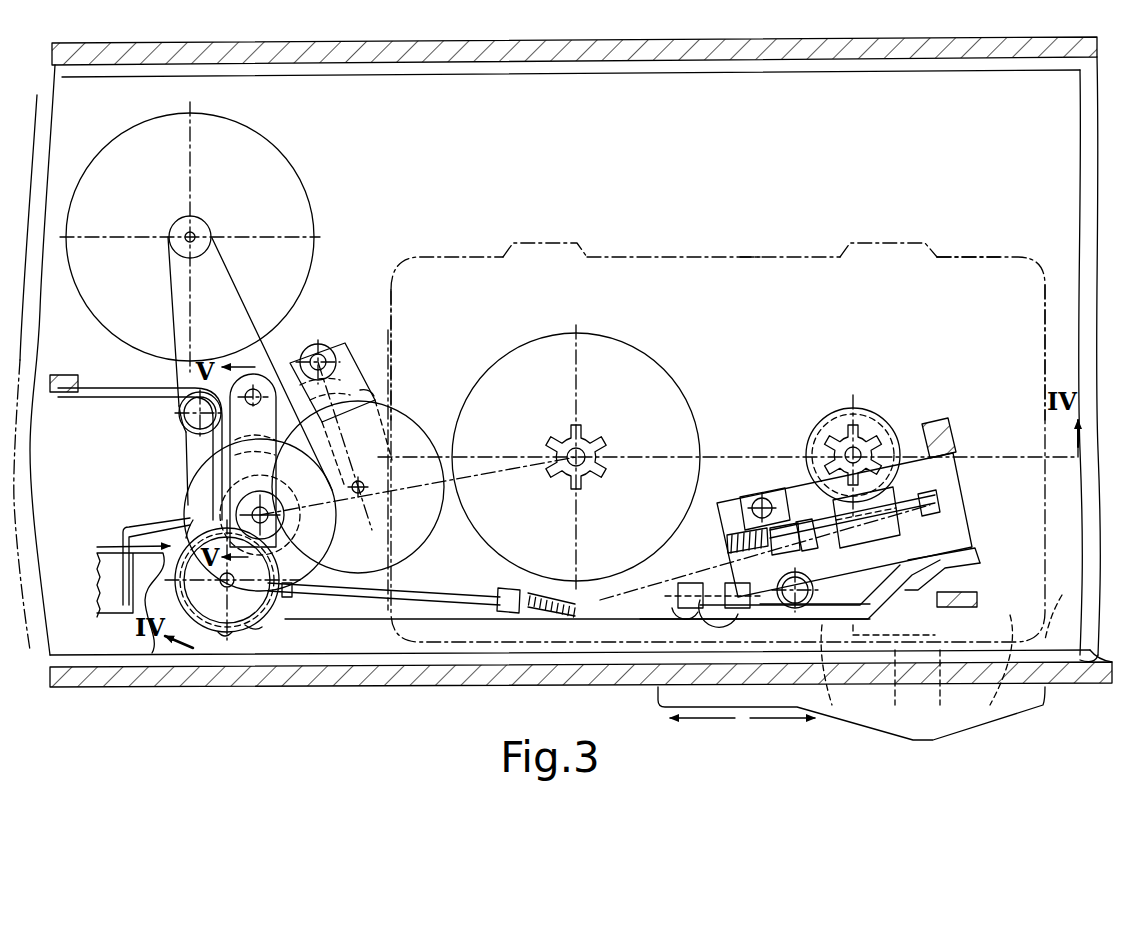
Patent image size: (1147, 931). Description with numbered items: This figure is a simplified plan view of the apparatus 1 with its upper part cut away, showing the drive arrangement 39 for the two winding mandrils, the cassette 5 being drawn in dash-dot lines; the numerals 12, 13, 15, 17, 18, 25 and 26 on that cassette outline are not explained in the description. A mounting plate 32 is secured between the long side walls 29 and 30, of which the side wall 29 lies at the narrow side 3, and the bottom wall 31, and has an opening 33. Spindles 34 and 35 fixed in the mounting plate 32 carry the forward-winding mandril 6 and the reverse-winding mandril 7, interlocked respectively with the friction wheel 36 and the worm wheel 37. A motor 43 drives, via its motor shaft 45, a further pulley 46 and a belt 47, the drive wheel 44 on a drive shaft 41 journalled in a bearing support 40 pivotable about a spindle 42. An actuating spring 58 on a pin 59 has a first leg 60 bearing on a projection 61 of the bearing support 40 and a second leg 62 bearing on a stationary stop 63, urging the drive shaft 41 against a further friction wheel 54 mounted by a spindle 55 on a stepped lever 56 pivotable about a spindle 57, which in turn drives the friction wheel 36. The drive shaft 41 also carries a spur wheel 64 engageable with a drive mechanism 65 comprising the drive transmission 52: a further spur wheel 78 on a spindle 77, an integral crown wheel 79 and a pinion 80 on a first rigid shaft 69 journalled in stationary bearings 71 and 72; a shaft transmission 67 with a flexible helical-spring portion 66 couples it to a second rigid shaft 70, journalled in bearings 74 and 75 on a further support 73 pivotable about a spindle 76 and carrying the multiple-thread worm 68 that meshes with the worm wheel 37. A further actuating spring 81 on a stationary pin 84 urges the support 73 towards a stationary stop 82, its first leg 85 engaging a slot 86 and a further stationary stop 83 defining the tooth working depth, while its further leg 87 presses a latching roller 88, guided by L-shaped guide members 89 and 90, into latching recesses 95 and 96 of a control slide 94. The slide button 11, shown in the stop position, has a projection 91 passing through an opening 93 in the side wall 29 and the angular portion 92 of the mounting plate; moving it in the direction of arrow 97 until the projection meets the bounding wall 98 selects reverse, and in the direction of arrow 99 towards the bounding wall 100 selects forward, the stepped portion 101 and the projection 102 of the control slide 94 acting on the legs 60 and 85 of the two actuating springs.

The apparatus 1 is at (1098, 132).
The long and narrow side 3 is at (170, 690).
The cassette 5 is at (880, 233).
The forward-winding mandril 6 is at (588, 440).
The reverse-winding mandril 7 is at (822, 440).
The slide button 11 is at (975, 732).
The cartridge housing outline 12 is at (1031, 255).
The cartridge top notch 13 is at (748, 262).
The cartridge top edge portion 15 is at (963, 255).
The cartridge right side wall 17 is at (1046, 298).
The cartridge left side wall 18 is at (390, 308).
The cartridge top projection 25 is at (788, 255).
The cartridge top projection 26 is at (608, 255).
The side wall 29 is at (62, 680).
The side wall 30 is at (60, 52).
The bottom wall 31 is at (42, 130).
The mounting plate 32 is at (1072, 153).
The opening 33 is at (374, 392).
The spindle 34 is at (584, 470).
The spindle 35 is at (860, 448).
The winding mandril wheel 36 is at (603, 345).
The winding mandril wheel 37 is at (846, 412).
The drive arrangement 39 is at (341, 246).
The bearing support 40 is at (270, 376).
The drive shaft 41 is at (258, 505).
The spindle 42 is at (255, 388).
The motor 43 is at (262, 143).
The drive wheel 44 is at (192, 511).
The motor shaft 45 is at (186, 236).
The further pulley 46 is at (203, 218).
The belt 47 is at (244, 290).
The drive transmission 52 is at (280, 612).
The further friction wheel 54 is at (402, 425).
The spindle 55 is at (356, 480).
The stepped pivotable lever 56 is at (352, 383).
The spindle 57 is at (320, 352).
The actuating spring 58 is at (183, 438).
The pin 59 is at (188, 413).
The first leg 60 is at (162, 510).
The projection 61 is at (226, 505).
The second leg 62 is at (136, 386).
The stationary stop 63 is at (62, 372).
The spur wheel 64 is at (272, 508).
The drive mechanism 65 is at (85, 538).
The flexible portion 66 is at (582, 590).
The shaft transmission 67 is at (482, 586).
The second drive section 68 is at (876, 532).
The first rigid shaft 69 is at (396, 592).
The second rigid shaft 70 is at (822, 525).
The stationary bearing 71 is at (227, 580).
The stationary bearing 72 is at (510, 614).
The further support 73 is at (948, 492).
The bearing 74 is at (800, 542).
The bearing 75 is at (932, 514).
The spindle 76 is at (760, 498).
The spindle 77 is at (232, 580).
The further spur wheel 78 is at (222, 628).
The crown wheel 79 is at (248, 628).
The pinion 80 is at (288, 597).
The further actuating spring 81 is at (812, 586).
The stationary stop 82 is at (978, 600).
The further stationary stop 83 is at (952, 445).
The stationary pin 84 is at (804, 620).
The first leg 85 is at (955, 578).
The slot 86 is at (968, 556).
The further leg 87 is at (733, 575).
The latching roller 88 is at (712, 578).
The L-shaped guide member 89 is at (676, 596).
The L-shaped guide member 90 is at (744, 598).
The projection 91 is at (938, 628).
The angular portion 92 is at (1100, 656).
The opening 93 is at (948, 681).
The control slide 94 is at (1063, 608).
The latching recess 95 is at (720, 622).
The latching recess 96 is at (664, 620).
The arrow 97 is at (720, 735).
The bounding wall 98 is at (836, 668).
The arrow 99 is at (755, 725).
The bounding wall 100 is at (995, 664).
The stepped portion 101 is at (138, 618).
The projection 102 is at (893, 680).